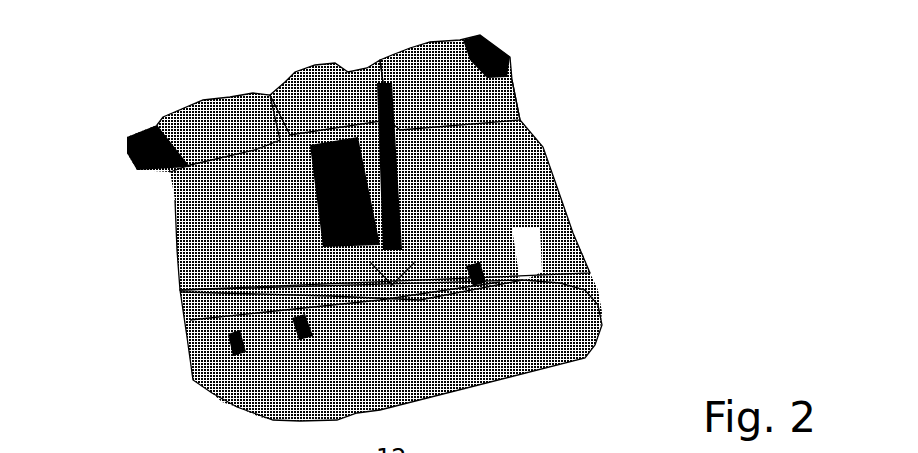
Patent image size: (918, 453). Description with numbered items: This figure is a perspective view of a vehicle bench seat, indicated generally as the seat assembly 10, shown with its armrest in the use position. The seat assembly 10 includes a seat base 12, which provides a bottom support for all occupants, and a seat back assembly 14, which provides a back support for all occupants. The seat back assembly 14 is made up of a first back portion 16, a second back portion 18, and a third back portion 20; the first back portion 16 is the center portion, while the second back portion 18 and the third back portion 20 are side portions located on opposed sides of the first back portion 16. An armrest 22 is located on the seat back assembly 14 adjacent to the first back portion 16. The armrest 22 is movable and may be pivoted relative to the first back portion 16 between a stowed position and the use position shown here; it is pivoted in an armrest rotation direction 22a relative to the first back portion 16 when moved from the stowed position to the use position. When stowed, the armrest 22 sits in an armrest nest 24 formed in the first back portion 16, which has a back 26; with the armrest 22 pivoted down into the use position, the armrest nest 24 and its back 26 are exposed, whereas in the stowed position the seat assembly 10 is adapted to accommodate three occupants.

The seat assembly 10 is at (118, 67).
The seat base 12 is at (598, 291).
The seat back assembly 14 is at (508, 126).
The first back portion 16 is at (313, 67).
The second back portion 18 is at (413, 47).
The third back portion 20 is at (227, 100).
The armrest 22 is at (345, 292).
The armrest rotation direction 22a is at (396, 256).
The armrest nest 24 is at (402, 153).
The back 26 is at (305, 150).